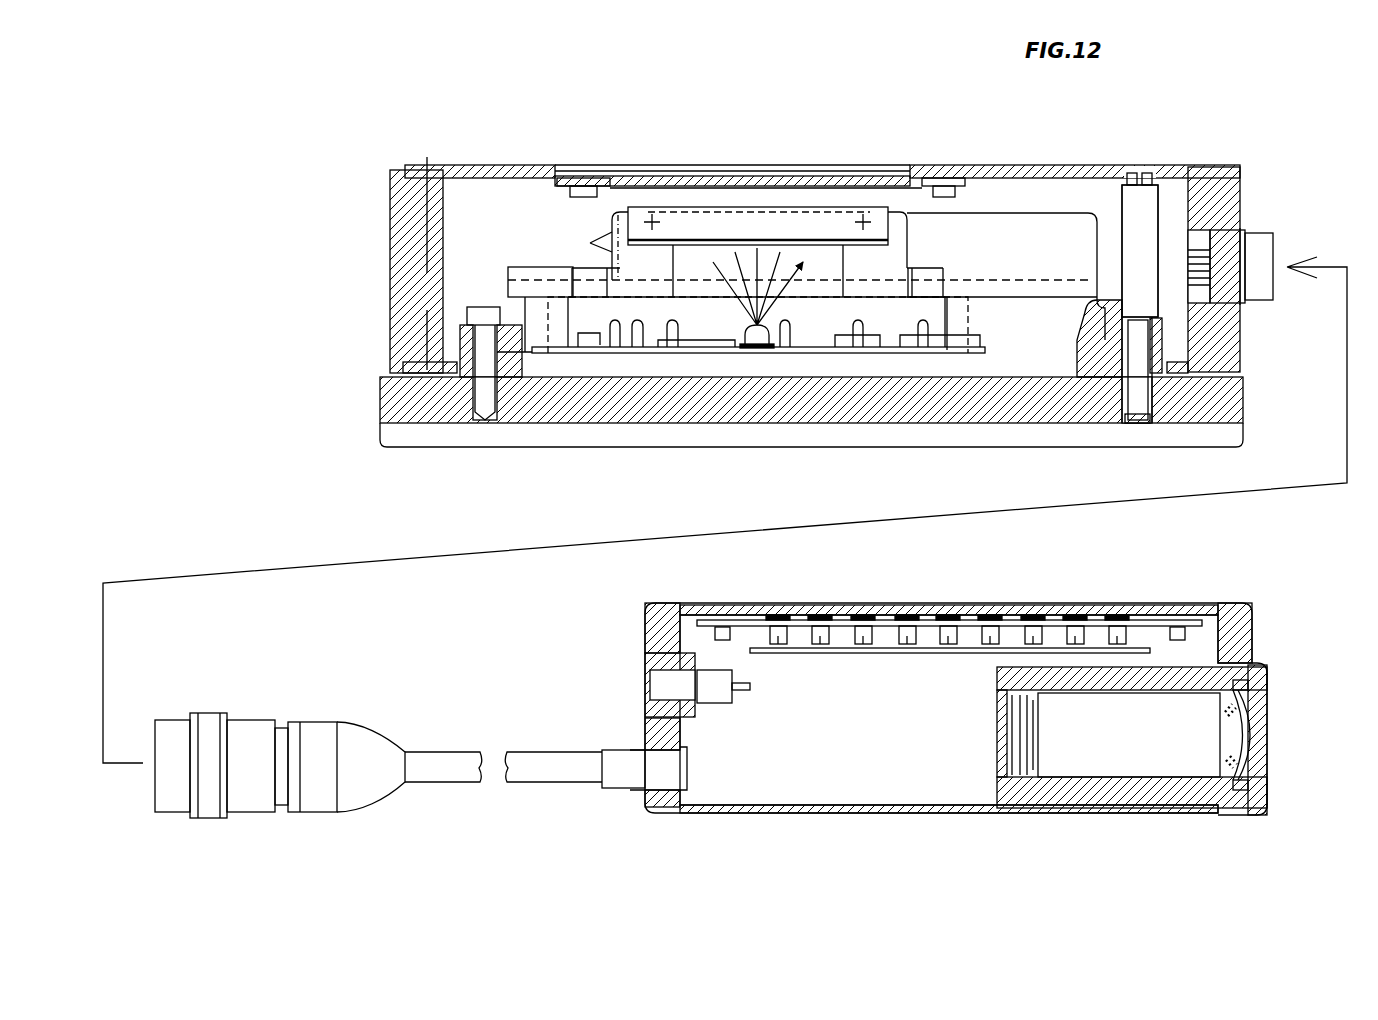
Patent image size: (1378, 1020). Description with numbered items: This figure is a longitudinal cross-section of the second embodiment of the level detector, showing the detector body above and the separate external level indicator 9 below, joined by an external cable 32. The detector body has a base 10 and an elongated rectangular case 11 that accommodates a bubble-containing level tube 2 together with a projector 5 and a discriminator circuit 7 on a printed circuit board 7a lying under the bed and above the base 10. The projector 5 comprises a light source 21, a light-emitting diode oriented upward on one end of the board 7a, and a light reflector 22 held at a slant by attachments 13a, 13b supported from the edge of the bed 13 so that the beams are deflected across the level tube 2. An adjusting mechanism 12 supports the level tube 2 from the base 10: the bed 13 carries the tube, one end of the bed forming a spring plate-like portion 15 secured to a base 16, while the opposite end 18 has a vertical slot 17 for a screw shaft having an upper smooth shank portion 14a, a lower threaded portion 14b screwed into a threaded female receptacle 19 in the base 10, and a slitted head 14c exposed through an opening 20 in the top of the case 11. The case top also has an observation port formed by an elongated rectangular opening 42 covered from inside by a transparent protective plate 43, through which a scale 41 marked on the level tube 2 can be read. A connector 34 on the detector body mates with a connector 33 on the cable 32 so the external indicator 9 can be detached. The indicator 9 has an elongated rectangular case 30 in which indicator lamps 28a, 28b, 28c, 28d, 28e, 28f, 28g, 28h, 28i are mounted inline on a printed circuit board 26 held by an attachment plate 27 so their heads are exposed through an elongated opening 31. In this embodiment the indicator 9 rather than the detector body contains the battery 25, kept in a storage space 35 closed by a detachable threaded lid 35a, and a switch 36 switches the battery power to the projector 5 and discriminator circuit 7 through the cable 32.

The bubble-containing level tube 2 is at (997, 212).
The projector 5 is at (842, 220).
The discriminator circuit 7 is at (698, 357).
The printed circuit board 7a is at (823, 352).
The external level indicator 9 is at (878, 603).
The base 10 is at (932, 403).
The elongated rectangular case 11 is at (480, 165).
The adjusting mechanism 12 is at (1158, 212).
The bed 13 is at (1023, 310).
The attachment 13a is at (888, 255).
The attachment 13b is at (612, 223).
The upper smooth shank portion 14a is at (1140, 243).
The lower threaded portion 14b is at (1140, 400).
The slitted head 14c is at (1147, 173).
The spring plate-like portion 15 is at (562, 350).
The base 16 is at (527, 360).
The vertical slot 17 is at (1133, 340).
The opposite end of the bed 18 is at (1110, 360).
The threaded female receptacle 19 is at (1140, 423).
The opening 20 is at (1132, 173).
The light source 21 is at (757, 352).
The light reflector 22 is at (657, 168).
The battery 25 is at (1150, 748).
The printed circuit board 26 is at (930, 650).
The attachment plate 27 is at (800, 622).
The indicator lamp 28a is at (777, 643).
The indicator lamp 28b is at (822, 643).
The indicator lamp 28c is at (862, 643).
The indicator lamp 28d is at (903, 643).
The indicator lamp 28e is at (950, 643).
The indicator lamp 28f is at (992, 635).
The indicator lamp 28g is at (1033, 635).
The indicator lamp 28h is at (1077, 633).
The indicator lamp 28i is at (1120, 633).
The elongated rectangular case 30 is at (1240, 635).
The elongated opening 31 is at (893, 610).
The cable 32 is at (525, 762).
The connector 33 is at (205, 795).
The connector 34 is at (1263, 282).
The storage space 35 is at (1097, 790).
The detachable threaded lid 35a is at (1253, 738).
The switch 36 is at (655, 683).
The scale 41 is at (830, 165).
The elongated rectangular opening 42 is at (748, 167).
The transparent protective plate 43 is at (680, 167).